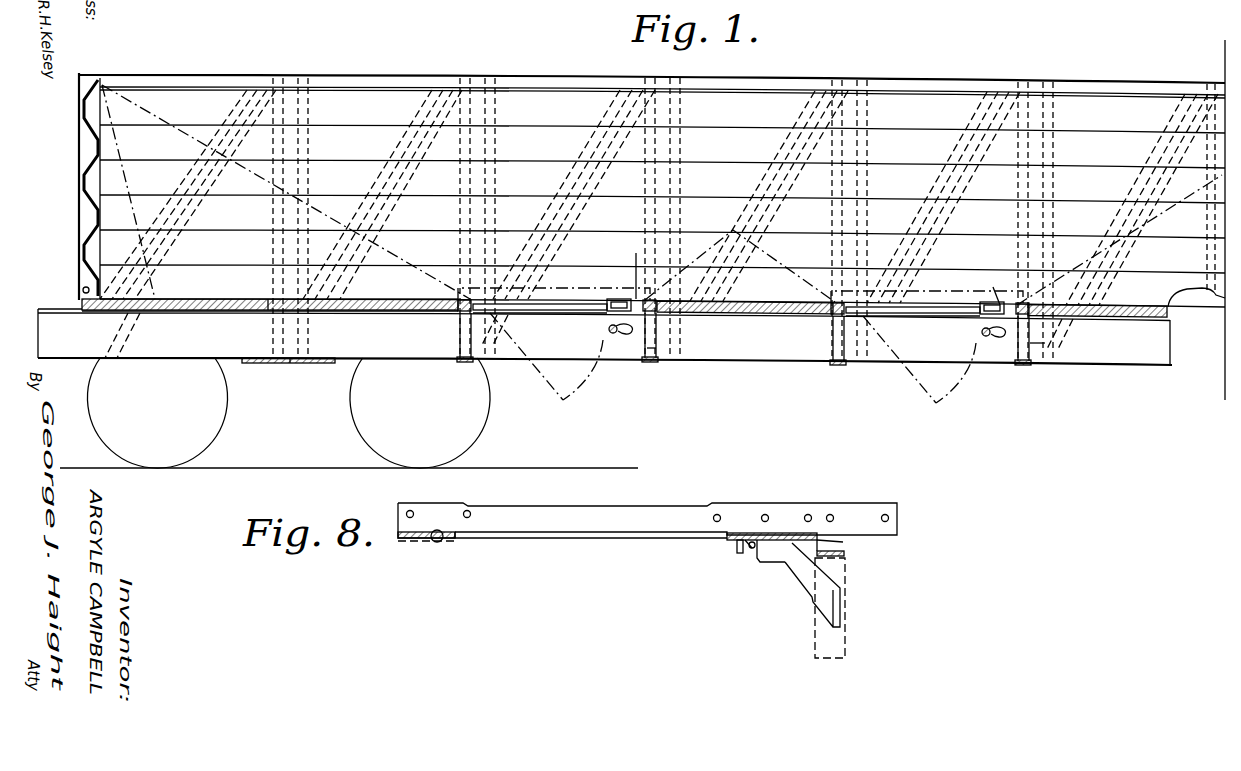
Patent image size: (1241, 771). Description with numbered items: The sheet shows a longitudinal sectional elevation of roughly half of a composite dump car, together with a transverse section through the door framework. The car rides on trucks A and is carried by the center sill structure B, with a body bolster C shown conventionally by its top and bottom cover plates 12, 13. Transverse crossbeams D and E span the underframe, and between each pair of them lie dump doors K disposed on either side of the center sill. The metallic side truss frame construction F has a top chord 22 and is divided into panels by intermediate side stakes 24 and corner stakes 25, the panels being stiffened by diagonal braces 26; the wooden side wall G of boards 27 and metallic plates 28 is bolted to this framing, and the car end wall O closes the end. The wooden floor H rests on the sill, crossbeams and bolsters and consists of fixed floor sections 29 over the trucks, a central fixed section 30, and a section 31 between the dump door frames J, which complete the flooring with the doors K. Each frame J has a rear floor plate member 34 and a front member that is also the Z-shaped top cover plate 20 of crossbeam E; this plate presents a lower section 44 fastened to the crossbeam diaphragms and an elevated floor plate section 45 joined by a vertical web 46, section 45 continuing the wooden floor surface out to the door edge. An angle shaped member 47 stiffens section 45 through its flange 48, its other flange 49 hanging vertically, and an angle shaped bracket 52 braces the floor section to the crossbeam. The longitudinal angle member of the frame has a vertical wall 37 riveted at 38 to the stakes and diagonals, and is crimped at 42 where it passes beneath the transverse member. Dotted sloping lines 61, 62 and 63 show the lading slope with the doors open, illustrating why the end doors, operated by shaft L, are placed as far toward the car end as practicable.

In FIG. 1, the top cover plate 12 is at (255, 313).
In FIG. 1, the bottom cover plate 13 is at (260, 363).
In FIG. 1, the top cover plate 20 is at (621, 300).
In FIG. 8, the top cover plate 20 is at (790, 533).
In FIG. 1, the top chord 22 is at (702, 76).
In FIG. 1, the intermediate side stakes 24 is at (310, 78).
In FIG. 1, the corner stakes 25 is at (123, 155).
In FIG. 1, the diagonal braces 26 is at (214, 221).
In FIG. 1, the wooden boards 27 is at (375, 130).
In FIG. 1, the metallic plates 28 is at (347, 102).
In FIG. 1, the fixed floor sections 29 is at (268, 301).
In FIG. 1, the fixed floor section 30 is at (1120, 306).
In FIG. 1, the fixed floor section 31 is at (745, 302).
In FIG. 1, the floor plate member 34 is at (465, 300).
In FIG. 8, the floor plate member 34 is at (430, 532).
In FIG. 1, the vertical wall 37 is at (726, 324).
In FIG. 8, the vertical wall 37 is at (568, 520).
In FIG. 8, the rivets 38 is at (765, 514).
In FIG. 8, the crimp 42 is at (413, 541).
In FIG. 8, the horizontal wall section 44 is at (845, 554).
In FIG. 8, the floor plate section 45 is at (737, 545).
In FIG. 8, the vertical web section 46 is at (828, 543).
In FIG. 8, the angle shaped member 47 is at (745, 541).
In FIG. 8, the flange 48 is at (758, 558).
In FIG. 8, the flange 49 is at (750, 548).
In FIG. 8, the angle shaped bracket 52 is at (800, 570).
In FIG. 1, the sloping line 61 is at (330, 208).
In FIG. 1, the sloping lines 62 is at (750, 238).
In FIG. 1, the sloping line 63 is at (1017, 290).
In FIG. 1, the trucks A is at (488, 400).
In FIG. 1, the center sill structure B is at (750, 352).
In FIG. 1, the body bolsters C is at (290, 364).
In FIG. 1, the transverse crossbeam D is at (458, 330).
In FIG. 1, the transverse crossbeam E is at (647, 348).
In FIG. 8, the transverse crossbeam E is at (846, 650).
In FIG. 1, the metallic side truss frame construction F is at (800, 123).
In FIG. 1, the wooden side walls G is at (917, 113).
In FIG. 1, the wooden floor H is at (373, 300).
In FIG. 1, the dump door frames J is at (814, 270).
In FIG. 1, the dump doors K is at (740, 336).
In FIG. 1, the door operating shafts L is at (609, 330).
In FIG. 1, the car end wall O is at (79, 123).